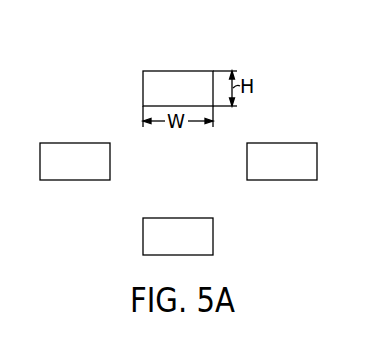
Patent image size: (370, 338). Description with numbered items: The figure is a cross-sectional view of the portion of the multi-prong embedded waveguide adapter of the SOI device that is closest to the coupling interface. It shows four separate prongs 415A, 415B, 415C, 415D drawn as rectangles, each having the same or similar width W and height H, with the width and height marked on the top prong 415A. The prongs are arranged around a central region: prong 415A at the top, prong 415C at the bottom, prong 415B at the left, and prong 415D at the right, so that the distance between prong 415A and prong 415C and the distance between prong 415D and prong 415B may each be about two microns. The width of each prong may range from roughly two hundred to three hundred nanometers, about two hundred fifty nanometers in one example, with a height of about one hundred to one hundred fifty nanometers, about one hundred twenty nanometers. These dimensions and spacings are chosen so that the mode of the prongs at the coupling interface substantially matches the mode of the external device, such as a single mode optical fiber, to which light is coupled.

The prong 415A is at (160, 71).
The prong 415B is at (55, 143).
The prong 415C is at (160, 218).
The prong 415D is at (263, 143).